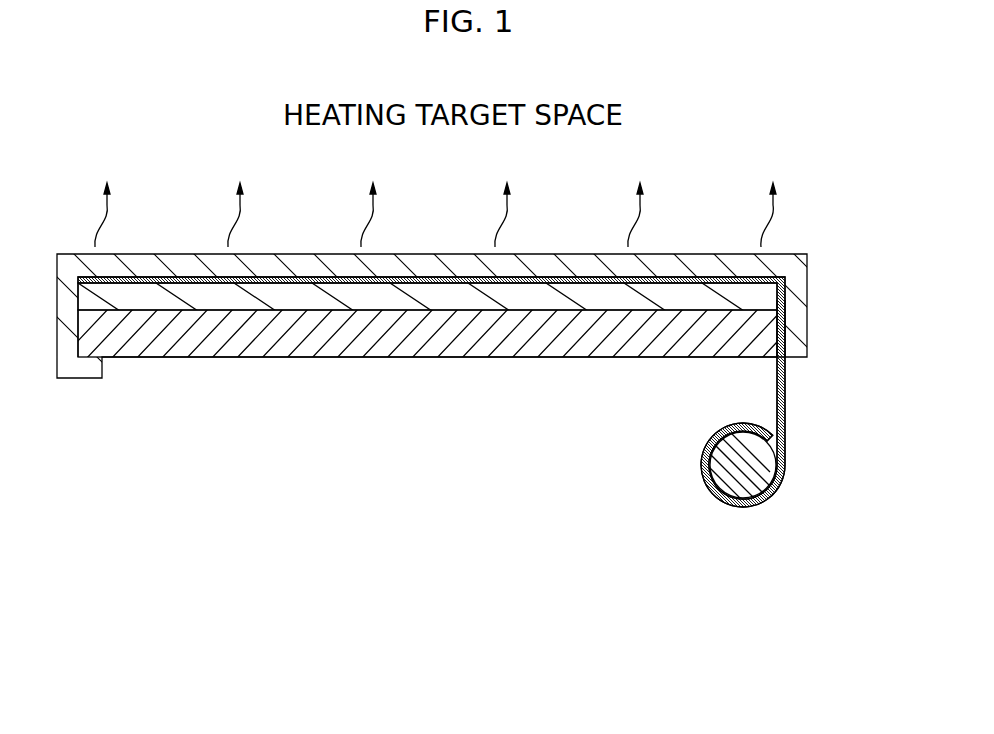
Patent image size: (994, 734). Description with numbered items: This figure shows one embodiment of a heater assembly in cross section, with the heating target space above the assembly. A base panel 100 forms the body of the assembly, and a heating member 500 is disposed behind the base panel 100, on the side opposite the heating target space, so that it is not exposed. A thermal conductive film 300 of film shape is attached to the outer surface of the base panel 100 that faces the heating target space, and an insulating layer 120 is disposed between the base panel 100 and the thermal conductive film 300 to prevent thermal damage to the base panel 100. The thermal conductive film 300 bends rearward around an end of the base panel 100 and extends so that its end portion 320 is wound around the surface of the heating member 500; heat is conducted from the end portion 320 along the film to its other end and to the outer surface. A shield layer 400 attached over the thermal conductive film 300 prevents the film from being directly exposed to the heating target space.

The base panel 100 is at (265, 345).
The insulating layer 120 is at (413, 305).
The thermal conductive film 300 is at (437, 282).
The end portion 320 is at (786, 448).
The shield layer 400 is at (558, 270).
The heating member 500 is at (747, 483).